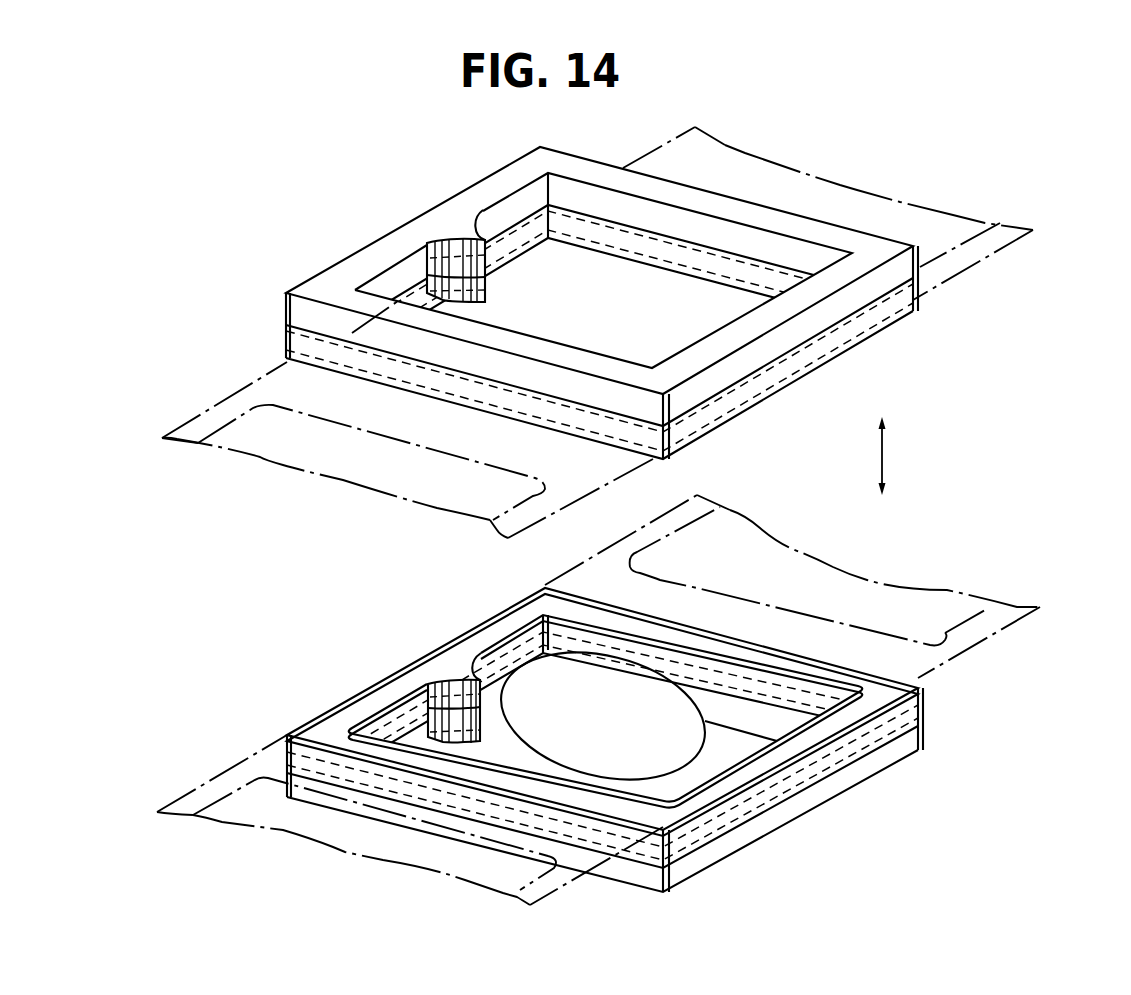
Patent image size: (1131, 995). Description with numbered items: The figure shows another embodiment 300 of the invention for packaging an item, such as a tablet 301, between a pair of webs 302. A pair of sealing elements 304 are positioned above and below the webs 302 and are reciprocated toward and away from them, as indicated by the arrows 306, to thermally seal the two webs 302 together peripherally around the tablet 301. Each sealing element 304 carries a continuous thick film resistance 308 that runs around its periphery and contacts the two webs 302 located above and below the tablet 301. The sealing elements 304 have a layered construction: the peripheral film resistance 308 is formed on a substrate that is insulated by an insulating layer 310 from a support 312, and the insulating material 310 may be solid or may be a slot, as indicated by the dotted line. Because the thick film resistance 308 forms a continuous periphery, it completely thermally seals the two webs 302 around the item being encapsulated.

The embodiment 300 is at (1018, 371).
The tablet 301 is at (687, 732).
The web 302 is at (296, 386).
The sealing element 304 is at (618, 516).
The arrows 306 is at (884, 455).
The continuous thick film resistance 308 is at (733, 410).
The insulating layer 310 is at (580, 215).
The support 312 is at (500, 175).